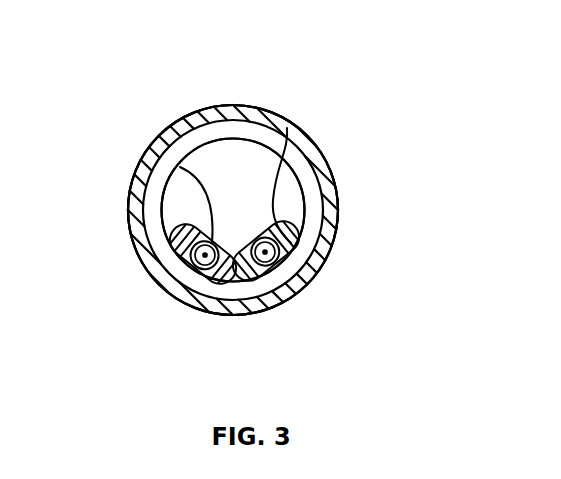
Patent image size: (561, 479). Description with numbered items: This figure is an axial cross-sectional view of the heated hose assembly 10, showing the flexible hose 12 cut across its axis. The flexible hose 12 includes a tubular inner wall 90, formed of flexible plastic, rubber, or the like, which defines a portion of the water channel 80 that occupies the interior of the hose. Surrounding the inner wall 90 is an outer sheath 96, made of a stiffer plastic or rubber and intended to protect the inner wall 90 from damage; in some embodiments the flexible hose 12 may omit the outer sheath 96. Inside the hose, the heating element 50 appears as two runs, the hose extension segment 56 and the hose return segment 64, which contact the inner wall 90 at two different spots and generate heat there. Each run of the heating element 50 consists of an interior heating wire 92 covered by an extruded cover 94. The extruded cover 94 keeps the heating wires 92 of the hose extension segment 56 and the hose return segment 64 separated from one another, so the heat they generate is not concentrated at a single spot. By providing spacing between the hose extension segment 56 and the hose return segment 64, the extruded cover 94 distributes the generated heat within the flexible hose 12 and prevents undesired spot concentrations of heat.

The heated hose assembly 10 is at (150, 63).
The flexible hose 12 is at (317, 123).
The heating element 50 is at (178, 256).
The hose extension segment 56 is at (193, 275).
The hose return segment 64 is at (282, 268).
The water channel 80 is at (212, 155).
The inner wall 90 is at (315, 190).
The heating wire 92 is at (265, 252).
The extruded cover 94 is at (180, 167).
The outer sheath 96 is at (177, 118).